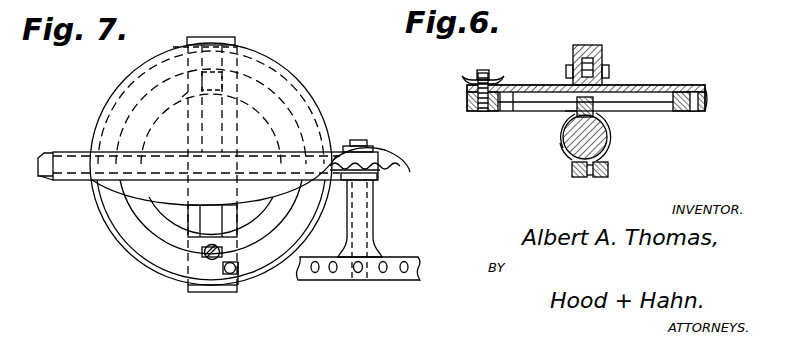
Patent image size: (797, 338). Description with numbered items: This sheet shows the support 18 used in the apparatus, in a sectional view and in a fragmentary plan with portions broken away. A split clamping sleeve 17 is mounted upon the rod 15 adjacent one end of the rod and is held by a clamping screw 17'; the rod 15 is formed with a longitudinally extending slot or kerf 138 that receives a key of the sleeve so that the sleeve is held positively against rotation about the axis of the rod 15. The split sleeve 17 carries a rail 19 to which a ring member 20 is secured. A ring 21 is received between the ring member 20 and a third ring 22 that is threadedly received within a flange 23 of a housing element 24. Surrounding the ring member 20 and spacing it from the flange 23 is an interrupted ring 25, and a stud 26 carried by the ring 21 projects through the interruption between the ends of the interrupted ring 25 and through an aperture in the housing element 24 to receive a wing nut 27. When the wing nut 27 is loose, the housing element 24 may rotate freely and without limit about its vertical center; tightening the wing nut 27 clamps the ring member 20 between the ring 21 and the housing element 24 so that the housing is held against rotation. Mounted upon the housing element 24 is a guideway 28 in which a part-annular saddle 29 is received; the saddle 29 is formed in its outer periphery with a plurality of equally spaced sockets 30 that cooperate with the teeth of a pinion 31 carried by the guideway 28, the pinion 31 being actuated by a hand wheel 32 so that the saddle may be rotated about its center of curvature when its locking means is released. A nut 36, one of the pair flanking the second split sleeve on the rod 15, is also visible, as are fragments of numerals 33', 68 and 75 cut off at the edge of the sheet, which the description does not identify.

In FIG. 6, the rod 15 is at (562, 149).
In FIG. 7, the split clamping sleeve 17 is at (192, 297).
In FIG. 6, the split clamping sleeve 17 is at (603, 137).
In FIG. 6, the clamping screw 17' is at (610, 168).
In FIG. 7, the support 18 is at (317, 91).
In FIG. 6, the support 18 is at (708, 107).
In FIG. 7, the rail 19 is at (218, 217).
In FIG. 6, the rail 19 is at (570, 112).
In FIG. 7, the ring member 20 is at (160, 237).
In FIG. 6, the ring member 20 is at (514, 103).
In FIG. 7, the ring 21 is at (234, 285).
In FIG. 6, the ring 21 is at (679, 111).
In FIG. 6, the third ring 22 is at (487, 112).
In FIG. 7, the flange 23 is at (110, 228).
In FIG. 6, the flange 23 is at (468, 104).
In FIG. 7, the housing element 24 is at (325, 110).
In FIG. 6, the housing element 24 is at (638, 85).
In FIG. 6, the interrupted ring 25 is at (693, 88).
In FIG. 7, the stud 26 is at (240, 274).
In FIG. 6, the stud 26 is at (486, 72).
In FIG. 6, the wing nut 27 is at (500, 81).
In FIG. 7, the guideway 28 is at (72, 158).
In FIG. 6, the guideway 28 is at (576, 48).
In FIG. 7, the part-annular saddle 29 is at (52, 178).
In FIG. 6, the part-annular saddle 29 is at (590, 45).
In FIG. 6, the sockets 30 is at (593, 70).
In FIG. 7, the pinion 31 is at (380, 157).
In FIG. 7, the hand wheel 32 is at (418, 258).
In FIG. 6, the part (cut off) 33' is at (581, 4).
In FIG. 6, the nut 36 is at (527, 5).
In FIG. 7, the part (cut off) 68 is at (156, 9).
In FIG. 7, the part (cut off) 75 is at (258, 8).
In FIG. 6, the slot or kerf 138 is at (597, 115).